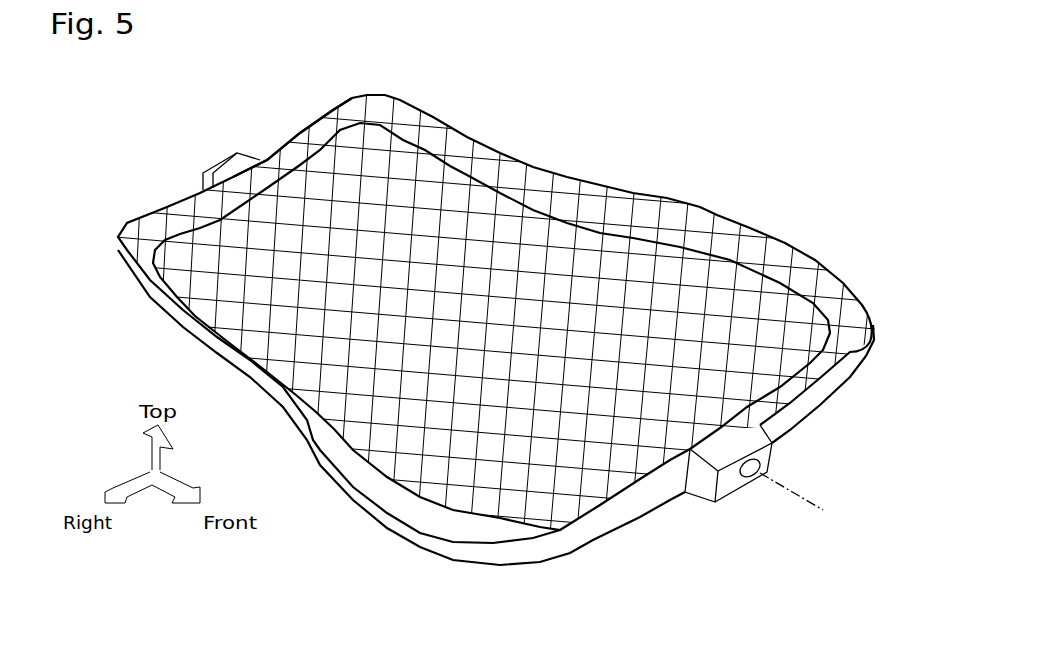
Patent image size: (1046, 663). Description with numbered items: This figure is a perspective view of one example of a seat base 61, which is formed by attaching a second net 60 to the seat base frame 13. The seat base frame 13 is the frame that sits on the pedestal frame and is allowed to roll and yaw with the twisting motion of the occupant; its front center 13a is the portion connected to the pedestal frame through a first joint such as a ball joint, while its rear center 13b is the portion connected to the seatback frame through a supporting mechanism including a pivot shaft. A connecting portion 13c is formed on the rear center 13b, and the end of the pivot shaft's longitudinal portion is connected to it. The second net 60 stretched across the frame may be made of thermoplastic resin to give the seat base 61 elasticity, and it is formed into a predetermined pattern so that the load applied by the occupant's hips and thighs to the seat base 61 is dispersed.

The seat base frame 13 is at (592, 182).
The front center 13a is at (730, 485).
The rear center 13b is at (275, 150).
The connecting portion 13c is at (233, 167).
The second net 60 is at (503, 212).
The seat base 61 is at (617, 519).